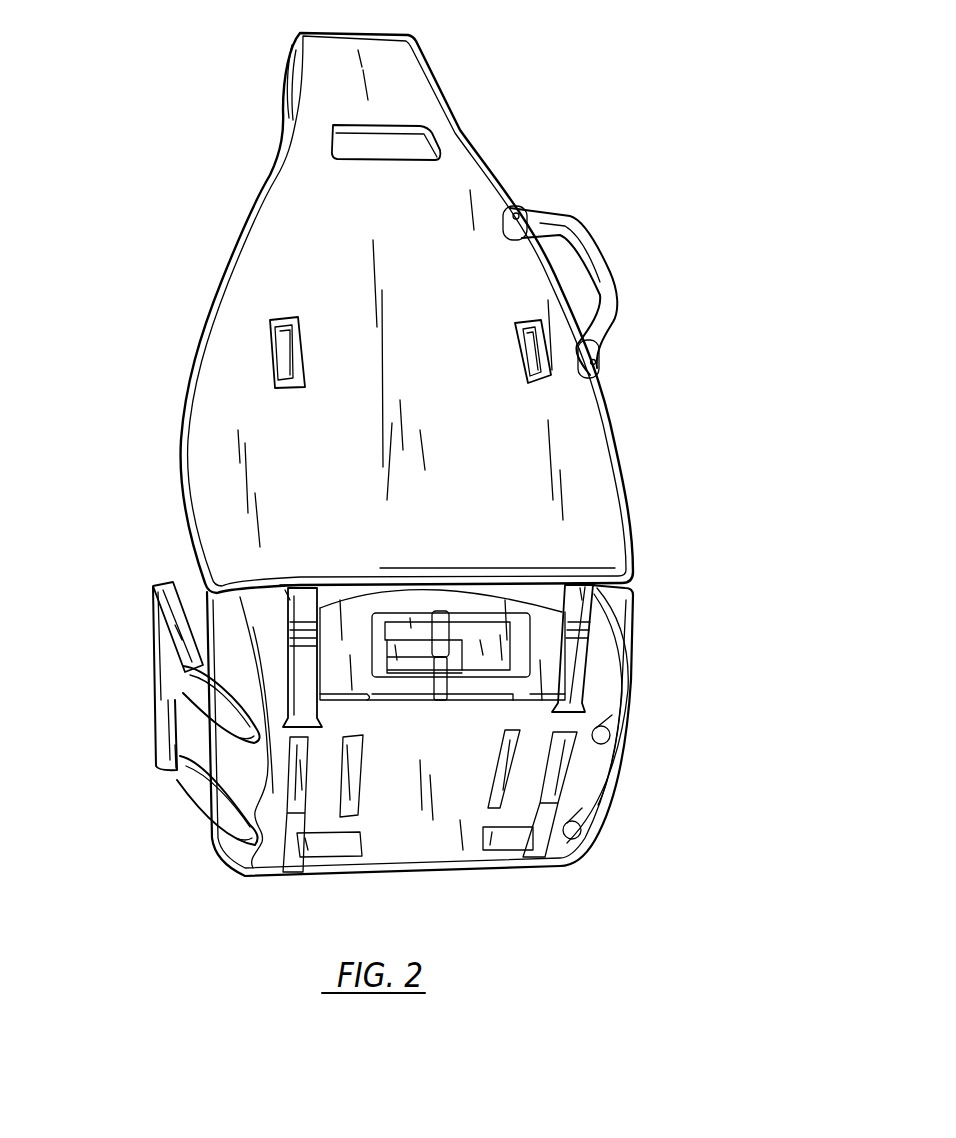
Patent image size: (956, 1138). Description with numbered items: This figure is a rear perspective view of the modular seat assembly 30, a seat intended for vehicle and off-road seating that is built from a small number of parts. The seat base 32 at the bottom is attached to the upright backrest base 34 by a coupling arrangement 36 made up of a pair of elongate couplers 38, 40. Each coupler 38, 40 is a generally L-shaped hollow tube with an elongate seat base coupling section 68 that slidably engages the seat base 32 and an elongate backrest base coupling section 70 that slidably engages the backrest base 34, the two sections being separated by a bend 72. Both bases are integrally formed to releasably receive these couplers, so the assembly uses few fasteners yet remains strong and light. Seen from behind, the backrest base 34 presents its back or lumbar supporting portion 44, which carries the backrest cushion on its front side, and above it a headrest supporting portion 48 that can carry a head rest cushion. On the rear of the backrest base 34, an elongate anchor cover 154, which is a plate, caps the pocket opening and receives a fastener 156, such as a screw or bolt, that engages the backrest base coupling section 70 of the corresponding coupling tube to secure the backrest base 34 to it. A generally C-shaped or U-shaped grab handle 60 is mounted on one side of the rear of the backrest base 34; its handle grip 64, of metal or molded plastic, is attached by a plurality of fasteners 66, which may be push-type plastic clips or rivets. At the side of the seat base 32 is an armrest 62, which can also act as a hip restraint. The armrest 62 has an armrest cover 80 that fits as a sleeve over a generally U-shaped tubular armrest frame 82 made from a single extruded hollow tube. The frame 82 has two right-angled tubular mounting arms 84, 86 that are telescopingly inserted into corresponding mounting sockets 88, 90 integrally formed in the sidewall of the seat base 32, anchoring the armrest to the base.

The modular seat assembly 30 is at (803, 302).
The seat base 32 is at (416, 722).
The backrest base 34 is at (410, 302).
The coupling arrangement 36 is at (610, 655).
The elongate coupler 38 is at (600, 600).
The elongate coupler 40 is at (280, 587).
The back or lumbar supporting portion 44 is at (168, 419).
The headrest supporting portion 48 is at (432, 48).
The grab handle 60 is at (600, 267).
The armrest 62 is at (161, 736).
The handle grip 64 is at (607, 285).
The fastener 66 is at (527, 215).
The seat base coupling section 68 is at (298, 862).
The backrest base coupling section 70 is at (580, 587).
The bend 72 is at (280, 620).
The armrest cover 80 is at (155, 607).
The tubular armrest frame 82 is at (170, 785).
The tubular mounting arm 84 is at (238, 733).
The tubular mounting arm 86 is at (240, 832).
The mounting socket 88 is at (230, 738).
The mounting socket 90 is at (222, 847).
The anchor cover 154 is at (280, 337).
The fastener 156 is at (285, 375).